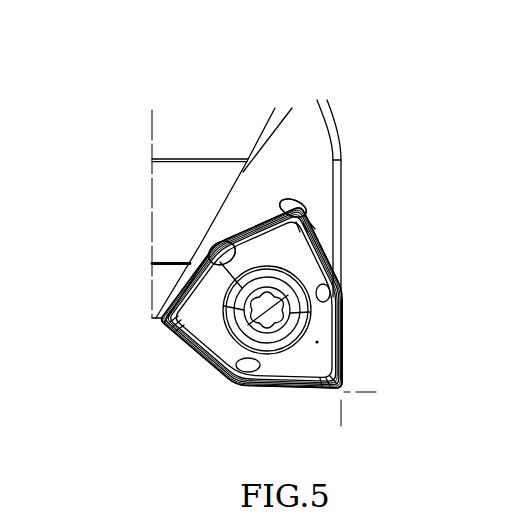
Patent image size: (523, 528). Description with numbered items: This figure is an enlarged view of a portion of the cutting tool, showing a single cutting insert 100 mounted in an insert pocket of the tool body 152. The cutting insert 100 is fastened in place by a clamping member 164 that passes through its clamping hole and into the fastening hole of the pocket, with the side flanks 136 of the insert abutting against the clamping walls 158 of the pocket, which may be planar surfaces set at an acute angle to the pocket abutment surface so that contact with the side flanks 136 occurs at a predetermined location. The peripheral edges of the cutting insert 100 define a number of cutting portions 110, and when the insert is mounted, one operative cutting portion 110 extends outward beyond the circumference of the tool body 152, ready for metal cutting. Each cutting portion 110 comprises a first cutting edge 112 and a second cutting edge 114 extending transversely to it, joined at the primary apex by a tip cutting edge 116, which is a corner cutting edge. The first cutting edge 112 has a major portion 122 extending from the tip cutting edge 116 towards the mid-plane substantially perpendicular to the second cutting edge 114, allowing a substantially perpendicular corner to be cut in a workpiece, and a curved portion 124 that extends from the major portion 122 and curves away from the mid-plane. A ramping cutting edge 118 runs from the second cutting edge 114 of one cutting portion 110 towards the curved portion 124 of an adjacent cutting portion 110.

The cutting insert 100 is at (173, 352).
The cutting portion 110 is at (353, 375).
The first cutting edge 112 is at (345, 347).
The second cutting edge 114 is at (322, 388).
The tip cutting edge 116 is at (336, 390).
The ramping cutting edge 118 is at (292, 388).
The major portion 122 is at (342, 330).
The curved portion 124 is at (342, 300).
The side flank 136 is at (198, 290).
The tool body 152 is at (207, 120).
The clamping wall 158 is at (153, 333).
The clamping member 164 is at (209, 248).